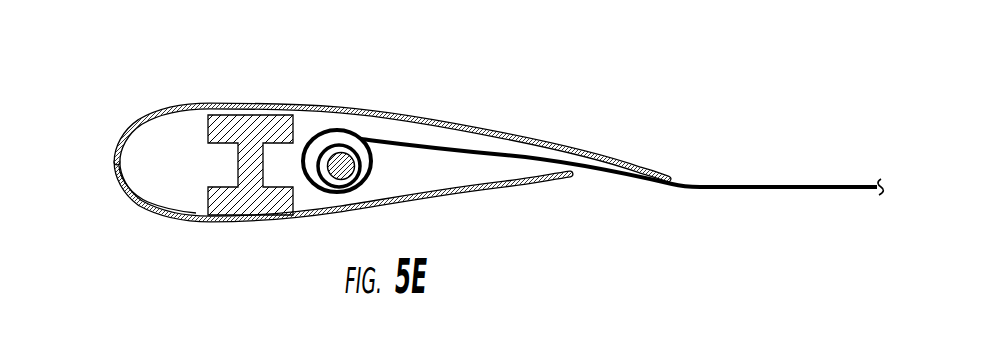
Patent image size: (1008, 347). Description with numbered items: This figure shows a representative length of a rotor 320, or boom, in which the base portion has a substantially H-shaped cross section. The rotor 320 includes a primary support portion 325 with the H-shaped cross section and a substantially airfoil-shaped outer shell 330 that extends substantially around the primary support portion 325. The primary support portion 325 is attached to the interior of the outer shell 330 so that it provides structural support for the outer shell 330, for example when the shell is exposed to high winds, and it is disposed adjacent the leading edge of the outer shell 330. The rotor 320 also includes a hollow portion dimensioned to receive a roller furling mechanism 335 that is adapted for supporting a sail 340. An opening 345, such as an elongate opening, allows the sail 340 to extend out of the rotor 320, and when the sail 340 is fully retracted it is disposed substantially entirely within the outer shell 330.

The rotor 320 is at (165, 93).
The primary support portion 325 is at (230, 213).
The outer shell 330 is at (158, 207).
The roller furling mechanism 335 is at (344, 153).
The sail 340 is at (441, 165).
The opening 345 is at (580, 173).